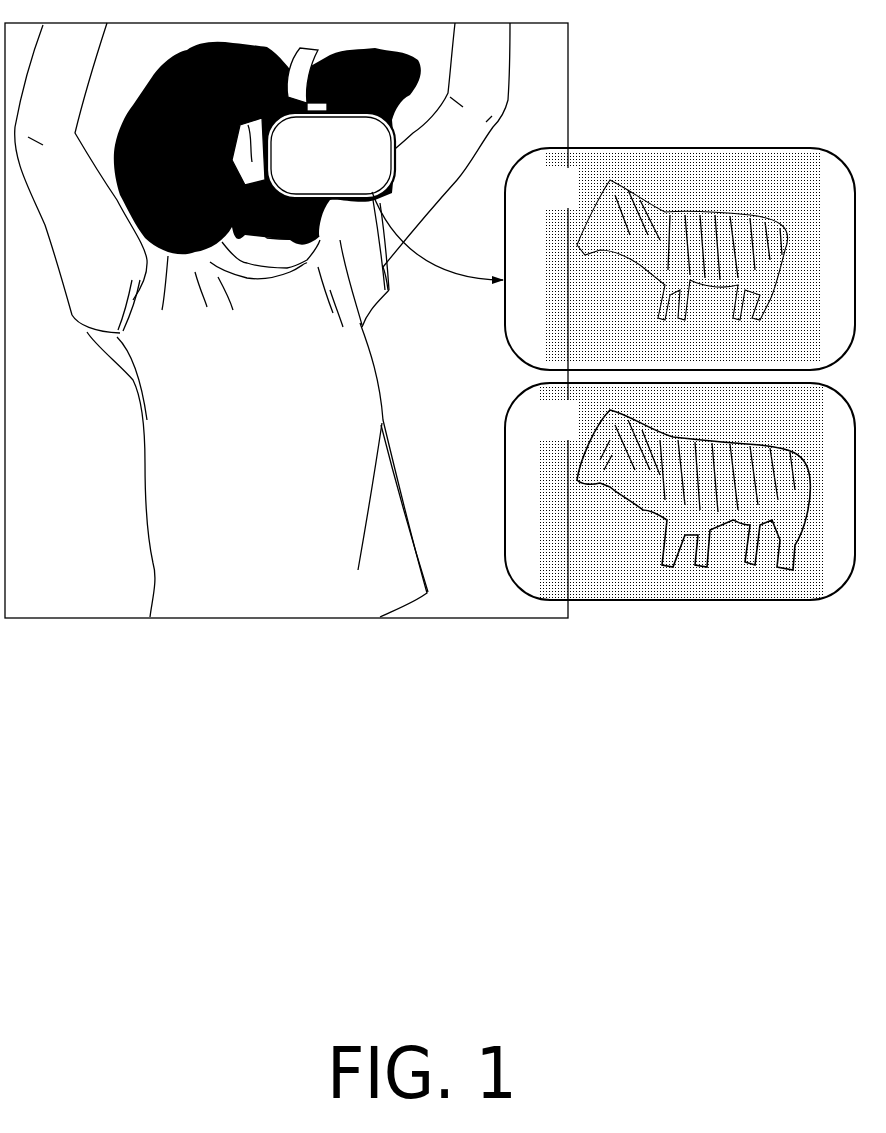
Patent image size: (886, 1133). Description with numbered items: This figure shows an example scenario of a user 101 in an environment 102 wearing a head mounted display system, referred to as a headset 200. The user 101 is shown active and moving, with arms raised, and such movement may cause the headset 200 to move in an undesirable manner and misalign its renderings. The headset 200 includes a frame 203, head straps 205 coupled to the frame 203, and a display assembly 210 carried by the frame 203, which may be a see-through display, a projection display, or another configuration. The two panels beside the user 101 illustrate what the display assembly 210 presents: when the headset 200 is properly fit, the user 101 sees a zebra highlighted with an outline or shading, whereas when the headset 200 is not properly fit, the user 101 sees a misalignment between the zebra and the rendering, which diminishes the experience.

The user 101 is at (90, 432).
The environment 102 is at (80, 578).
The headset 200 is at (341, 122).
The frame 203 is at (395, 177).
The head straps 205 is at (304, 116).
The display assembly 210 is at (352, 181).